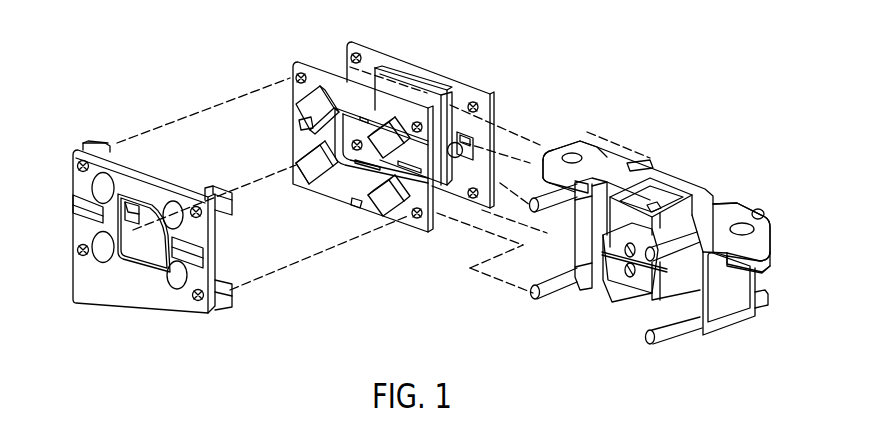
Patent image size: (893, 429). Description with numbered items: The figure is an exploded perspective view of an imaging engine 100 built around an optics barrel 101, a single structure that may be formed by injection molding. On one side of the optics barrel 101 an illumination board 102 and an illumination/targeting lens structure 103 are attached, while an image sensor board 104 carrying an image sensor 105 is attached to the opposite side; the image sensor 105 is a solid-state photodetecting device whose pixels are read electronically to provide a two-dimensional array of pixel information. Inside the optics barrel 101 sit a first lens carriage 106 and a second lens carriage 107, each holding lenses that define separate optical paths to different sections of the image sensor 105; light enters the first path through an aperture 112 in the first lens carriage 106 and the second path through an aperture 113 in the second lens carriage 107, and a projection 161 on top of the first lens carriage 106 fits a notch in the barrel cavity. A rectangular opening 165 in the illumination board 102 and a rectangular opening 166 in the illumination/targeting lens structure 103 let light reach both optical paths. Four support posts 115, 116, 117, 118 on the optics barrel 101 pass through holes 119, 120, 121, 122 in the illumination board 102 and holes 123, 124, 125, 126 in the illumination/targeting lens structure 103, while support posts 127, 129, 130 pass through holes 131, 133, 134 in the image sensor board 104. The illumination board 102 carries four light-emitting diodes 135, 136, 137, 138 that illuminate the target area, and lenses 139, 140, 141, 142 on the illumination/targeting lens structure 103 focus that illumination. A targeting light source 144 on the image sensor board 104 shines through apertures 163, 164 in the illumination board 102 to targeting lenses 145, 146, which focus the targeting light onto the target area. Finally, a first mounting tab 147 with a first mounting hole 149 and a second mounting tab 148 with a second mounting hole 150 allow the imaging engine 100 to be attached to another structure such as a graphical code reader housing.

The imaging engine 100 is at (180, 55).
The optics barrel 101 is at (724, 332).
The illumination board 102 is at (302, 62).
The illumination/targeting lens structure 103 is at (150, 283).
The image sensor board 104 is at (370, 56).
The image sensor 105 is at (427, 88).
The first lens carriage 106 is at (616, 237).
The second lens carriage 107 is at (620, 282).
The aperture 112 is at (610, 256).
The aperture 113 is at (630, 278).
The support post 115 is at (548, 200).
The support post 116 is at (549, 296).
The support post 117 is at (678, 244).
The support post 118 is at (677, 345).
The hole 119 is at (292, 72).
The hole 120 is at (296, 168).
The hole 121 is at (449, 105).
The hole 122 is at (411, 224).
The hole 123 is at (80, 148).
The hole 124 is at (83, 258).
The hole 125 is at (195, 201).
The hole 126 is at (198, 304).
The support post 127 is at (650, 162).
The support post 129 is at (761, 209).
The support post 130 is at (762, 304).
The hole 131 is at (351, 54).
The hole 133 is at (478, 101).
The hole 134 is at (468, 201).
The light-emitting diode 135 is at (307, 108).
The light-emitting diode 136 is at (311, 185).
The light-emitting diode 137 is at (395, 122).
The light-emitting diode 138 is at (381, 204).
The lens 139 is at (104, 182).
The lens 140 is at (106, 257).
The lens 141 is at (172, 210).
The lens 142 is at (178, 288).
The targeting light source 144 is at (463, 150).
The targeting lens 145 is at (80, 204).
The targeting lens 146 is at (197, 255).
The first mounting tab 147 is at (568, 150).
The second mounting tab 148 is at (766, 224).
The first mounting hole 149 is at (582, 152).
The second mounting hole 150 is at (741, 222).
The projection 161 is at (655, 206).
The aperture 163 is at (301, 127).
The aperture 164 is at (434, 226).
The rectangular opening 165 is at (353, 206).
The rectangular opening 166 is at (134, 262).